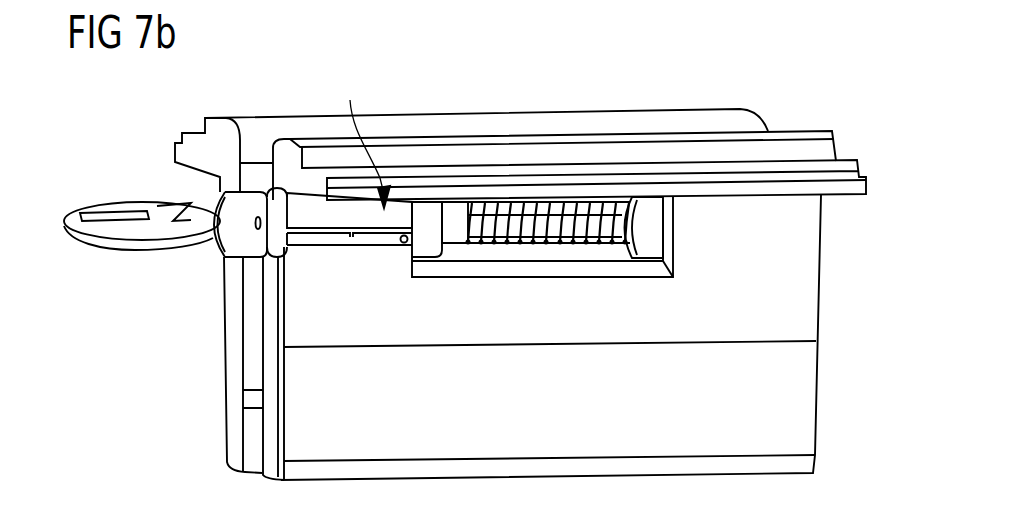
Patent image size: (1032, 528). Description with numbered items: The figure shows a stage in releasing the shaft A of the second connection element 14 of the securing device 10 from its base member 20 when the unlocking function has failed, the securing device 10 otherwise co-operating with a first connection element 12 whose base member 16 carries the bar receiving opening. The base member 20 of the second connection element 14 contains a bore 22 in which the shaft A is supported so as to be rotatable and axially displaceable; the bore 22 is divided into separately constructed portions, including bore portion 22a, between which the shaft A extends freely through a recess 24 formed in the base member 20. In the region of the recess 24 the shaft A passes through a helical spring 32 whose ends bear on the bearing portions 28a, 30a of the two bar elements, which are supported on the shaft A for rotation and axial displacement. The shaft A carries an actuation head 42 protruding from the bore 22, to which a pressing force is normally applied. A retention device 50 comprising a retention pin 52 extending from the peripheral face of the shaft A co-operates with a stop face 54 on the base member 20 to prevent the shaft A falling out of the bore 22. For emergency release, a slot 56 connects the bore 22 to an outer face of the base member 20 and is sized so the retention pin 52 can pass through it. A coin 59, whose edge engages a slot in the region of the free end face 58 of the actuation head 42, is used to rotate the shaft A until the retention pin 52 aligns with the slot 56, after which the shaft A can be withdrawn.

The securing device 10 is at (487, 81).
The first connection element 12 is at (224, 127).
The second connection element 14 is at (569, 137).
The base member 16 is at (215, 365).
The base member 20 is at (576, 337).
The bore 22 is at (349, 256).
The bore portion 22a is at (227, 334).
The recess 24 is at (537, 261).
The bearing portion 28a is at (679, 227).
The bearing portion 30a is at (421, 164).
The spring 32 is at (548, 262).
The actuation head 42 is at (217, 212).
The retention device 50 is at (365, 139).
The retention pin 52 is at (382, 269).
The stop face 54 is at (542, 256).
The slot 56 is at (326, 269).
The free end face 58 is at (186, 240).
The coin 59 is at (142, 196).
The shaft A is at (532, 157).